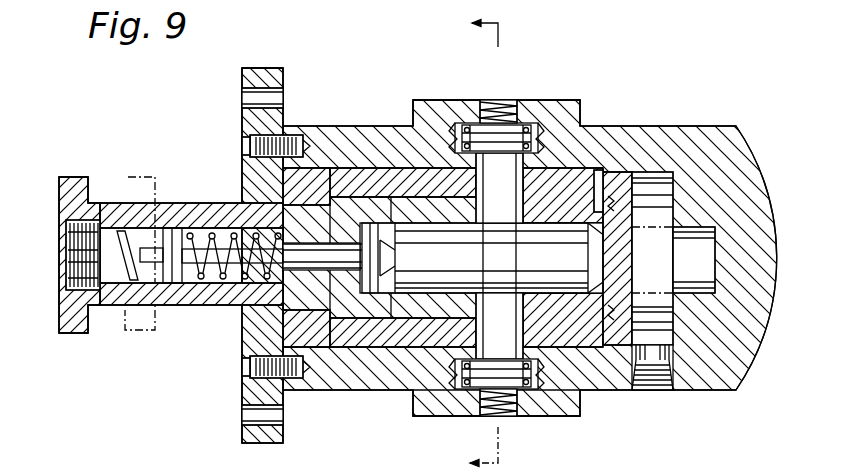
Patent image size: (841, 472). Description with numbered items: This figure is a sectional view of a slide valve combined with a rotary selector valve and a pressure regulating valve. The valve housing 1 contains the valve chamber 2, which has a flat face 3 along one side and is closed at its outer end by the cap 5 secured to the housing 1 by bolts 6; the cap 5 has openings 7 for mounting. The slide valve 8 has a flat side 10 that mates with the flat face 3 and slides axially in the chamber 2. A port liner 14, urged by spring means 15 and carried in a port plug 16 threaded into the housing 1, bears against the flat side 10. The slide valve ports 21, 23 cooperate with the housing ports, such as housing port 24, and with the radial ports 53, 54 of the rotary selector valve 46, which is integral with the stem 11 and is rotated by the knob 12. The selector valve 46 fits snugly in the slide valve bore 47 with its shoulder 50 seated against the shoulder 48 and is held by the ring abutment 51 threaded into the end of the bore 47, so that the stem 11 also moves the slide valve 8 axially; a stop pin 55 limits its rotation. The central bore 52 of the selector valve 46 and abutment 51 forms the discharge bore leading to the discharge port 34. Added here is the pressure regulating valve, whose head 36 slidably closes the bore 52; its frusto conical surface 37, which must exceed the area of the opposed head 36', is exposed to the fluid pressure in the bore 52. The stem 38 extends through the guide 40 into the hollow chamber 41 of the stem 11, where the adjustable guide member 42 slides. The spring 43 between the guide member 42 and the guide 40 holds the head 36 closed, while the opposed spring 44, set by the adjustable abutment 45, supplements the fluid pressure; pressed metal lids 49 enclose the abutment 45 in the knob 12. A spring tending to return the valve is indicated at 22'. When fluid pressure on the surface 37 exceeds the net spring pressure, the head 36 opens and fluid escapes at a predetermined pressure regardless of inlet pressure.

The valve housing 1 is at (768, 245).
The valve chamber 2 is at (660, 322).
The flat face 3 is at (337, 338).
The cap 5 is at (263, 68).
The bolts 6 is at (245, 140).
The openings 7 is at (257, 94).
The slide valve 8 is at (575, 395).
The flat side 10 is at (346, 412).
The stem 11 is at (138, 300).
The knob 12 is at (72, 325).
The port liner 14 is at (440, 135).
The spring means 15 is at (465, 140).
The port plug 16 is at (580, 120).
The slide valve port 21 is at (512, 140).
The upper valve spring 22' is at (492, 90).
The slide valve port 23 is at (485, 384).
The housing port 24 is at (503, 418).
The discharge port 34 is at (655, 362).
The head of pressure regulating valve 36 is at (694, 260).
The opposed head 36' is at (322, 256).
The frusto conical valve surface 37 is at (616, 257).
The stem 38 is at (430, 272).
The guide 40 is at (277, 292).
The hollow chamber 41 is at (167, 248).
The adjustable guide member 42 is at (173, 268).
The spring 43 is at (232, 232).
The spring 44 is at (136, 245).
The adjustable abutment 45 is at (78, 270).
The rotary selector valve 46 is at (460, 262).
The bore 47 is at (393, 250).
The shoulder 48 is at (338, 205).
The pressed metal lids 49 is at (63, 235).
The shoulder 50 is at (322, 205).
The ring abutment 51 is at (592, 345).
The central bore 52 is at (560, 278).
The radial port 53 is at (500, 232).
The radial port 54 is at (505, 262).
The stop pin 55 is at (598, 172).